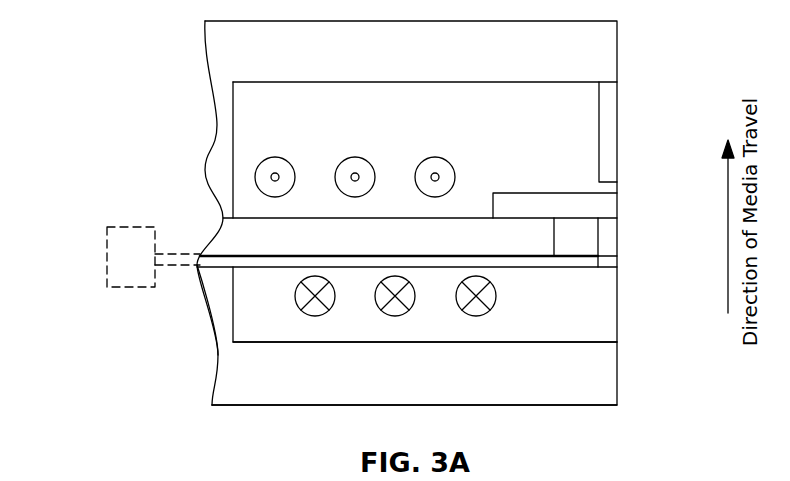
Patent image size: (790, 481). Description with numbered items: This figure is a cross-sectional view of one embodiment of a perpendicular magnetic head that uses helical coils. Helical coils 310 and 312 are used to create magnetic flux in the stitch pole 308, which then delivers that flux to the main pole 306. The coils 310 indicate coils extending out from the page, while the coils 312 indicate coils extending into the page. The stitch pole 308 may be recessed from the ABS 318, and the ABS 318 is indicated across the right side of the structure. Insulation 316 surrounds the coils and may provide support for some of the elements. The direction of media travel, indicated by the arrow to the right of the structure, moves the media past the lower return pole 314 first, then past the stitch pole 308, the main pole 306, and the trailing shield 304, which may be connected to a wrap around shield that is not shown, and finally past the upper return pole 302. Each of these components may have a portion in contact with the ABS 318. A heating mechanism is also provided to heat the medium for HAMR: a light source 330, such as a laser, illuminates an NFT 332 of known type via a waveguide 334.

The upper return pole 302 is at (425, 61).
The trailing shield 304 is at (617, 135).
The main pole 306 is at (617, 200).
The stitch pole 308 is at (407, 242).
The helical coils 310 is at (273, 157).
The helical coils 312 is at (301, 309).
The lower return pole 314 is at (414, 373).
The insulation 316 is at (425, 212).
The ABS 318 is at (619, 43).
The light source 330 is at (107, 266).
The NFT 332 is at (617, 245).
The waveguide 334 is at (203, 272).